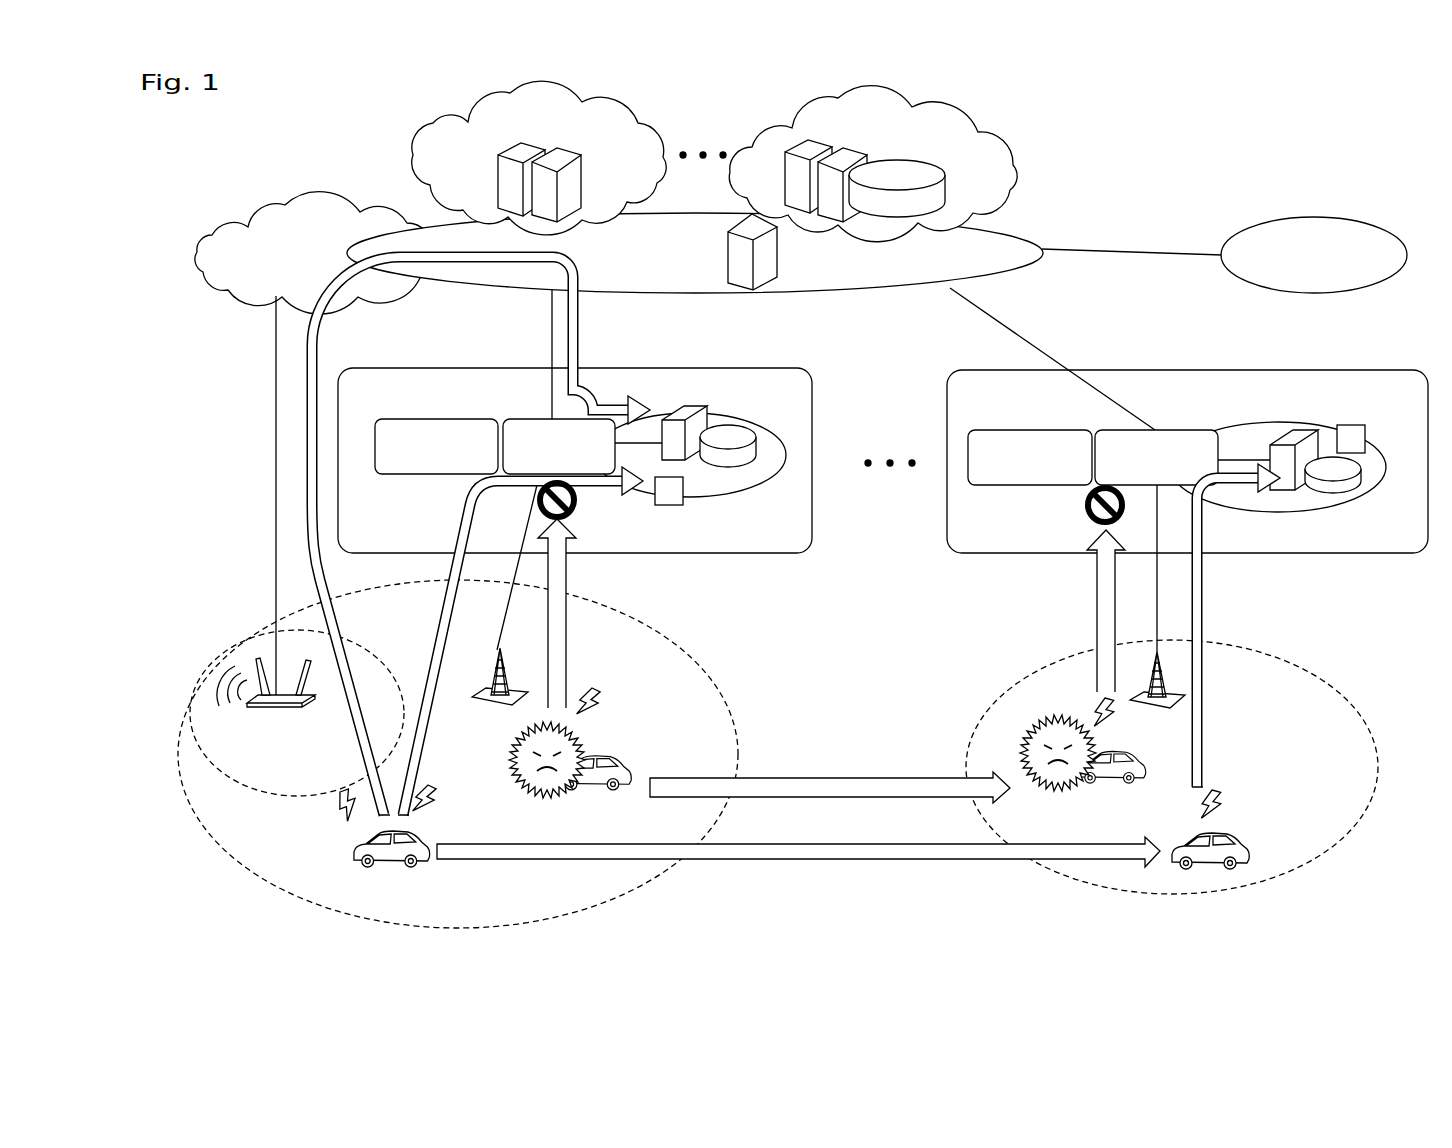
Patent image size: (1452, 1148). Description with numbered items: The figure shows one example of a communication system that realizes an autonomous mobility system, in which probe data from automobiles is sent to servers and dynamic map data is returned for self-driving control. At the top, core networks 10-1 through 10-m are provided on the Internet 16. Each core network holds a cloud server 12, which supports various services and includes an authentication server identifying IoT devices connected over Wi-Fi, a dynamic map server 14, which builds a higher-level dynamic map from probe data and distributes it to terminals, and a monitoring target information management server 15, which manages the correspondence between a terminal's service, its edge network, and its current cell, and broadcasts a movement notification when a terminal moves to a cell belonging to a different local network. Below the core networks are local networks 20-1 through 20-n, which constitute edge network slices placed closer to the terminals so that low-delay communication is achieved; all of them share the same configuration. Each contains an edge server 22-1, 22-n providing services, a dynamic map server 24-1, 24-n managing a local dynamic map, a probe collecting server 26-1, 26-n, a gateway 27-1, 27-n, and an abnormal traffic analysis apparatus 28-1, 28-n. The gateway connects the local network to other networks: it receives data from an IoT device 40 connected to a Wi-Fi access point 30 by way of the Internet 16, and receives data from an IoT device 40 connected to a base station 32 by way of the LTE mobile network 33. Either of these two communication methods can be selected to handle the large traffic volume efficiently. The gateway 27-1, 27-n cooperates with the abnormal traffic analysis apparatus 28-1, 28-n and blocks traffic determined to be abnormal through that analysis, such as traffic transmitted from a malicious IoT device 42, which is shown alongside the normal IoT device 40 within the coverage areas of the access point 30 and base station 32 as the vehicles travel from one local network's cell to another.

The core network 10-1 is at (1032, 233).
The core network 10-m is at (1330, 217).
The cloud server 12 is at (580, 178).
The dynamic map server 14 is at (947, 187).
The monitoring target information management server 15 is at (727, 274).
The Internet 16 is at (333, 197).
The local network 20-1 is at (772, 368).
The local network 20-n is at (1138, 370).
The edge server 22-1 is at (693, 400).
The edge server 22-n is at (1288, 428).
The dynamic map server 24-1 is at (757, 446).
The dynamic map server 24-n is at (1338, 497).
The probe collecting server 26-1 is at (669, 505).
The probe collecting server 26-n is at (1360, 425).
The gateway 27-1 is at (515, 418).
The gateway 27-n is at (1174, 430).
The abnormal traffic analysis apparatus 28-1 is at (440, 418).
The abnormal traffic analysis apparatus 28-n is at (1030, 430).
The Wi-Fi access point 30 is at (274, 708).
The base station 32 is at (492, 706).
The mobile network 33 is at (268, 630).
The IoT device 40 is at (380, 868).
The malicious IoT device 42 is at (586, 790).